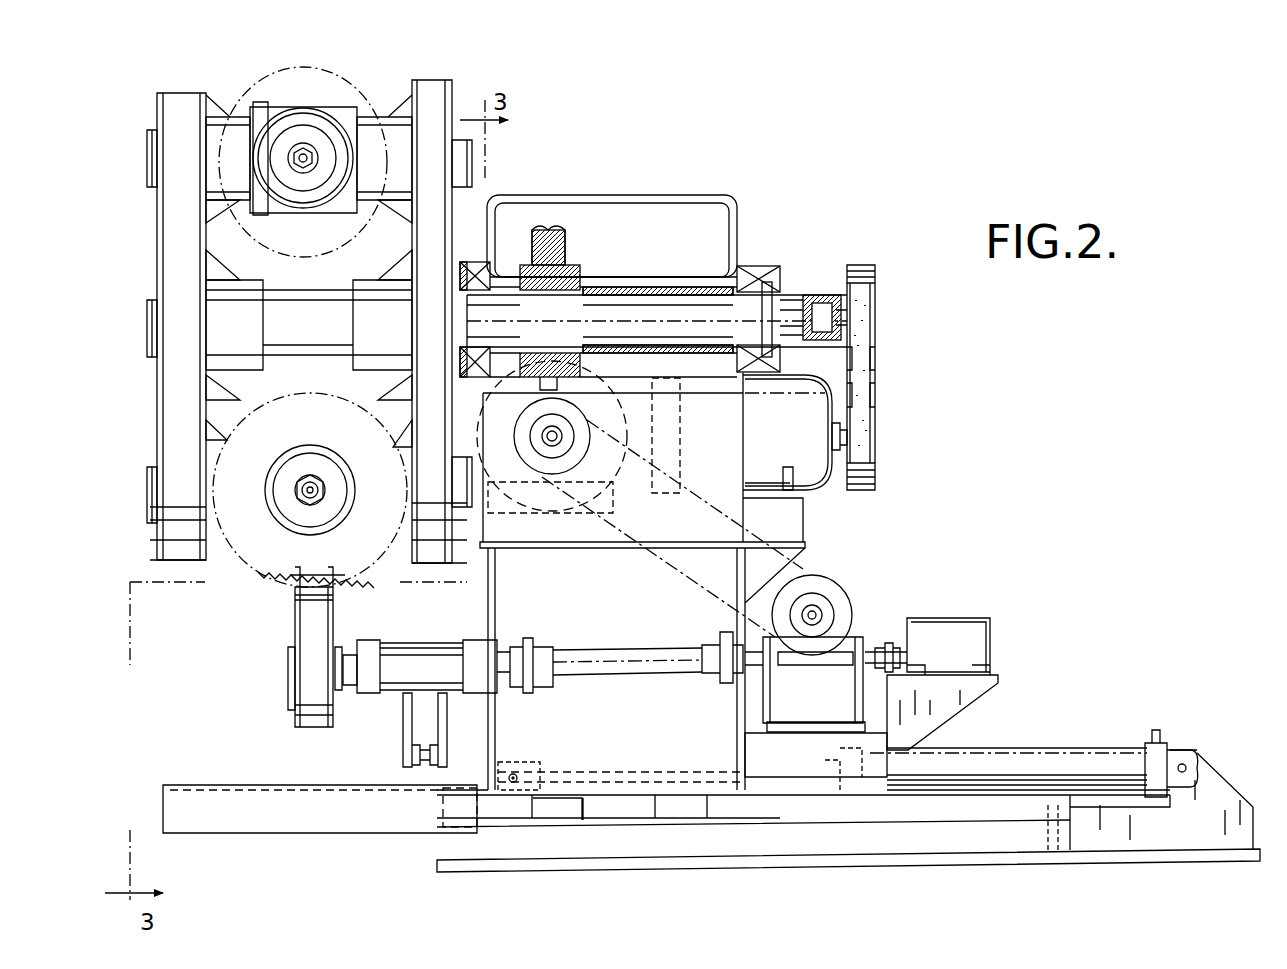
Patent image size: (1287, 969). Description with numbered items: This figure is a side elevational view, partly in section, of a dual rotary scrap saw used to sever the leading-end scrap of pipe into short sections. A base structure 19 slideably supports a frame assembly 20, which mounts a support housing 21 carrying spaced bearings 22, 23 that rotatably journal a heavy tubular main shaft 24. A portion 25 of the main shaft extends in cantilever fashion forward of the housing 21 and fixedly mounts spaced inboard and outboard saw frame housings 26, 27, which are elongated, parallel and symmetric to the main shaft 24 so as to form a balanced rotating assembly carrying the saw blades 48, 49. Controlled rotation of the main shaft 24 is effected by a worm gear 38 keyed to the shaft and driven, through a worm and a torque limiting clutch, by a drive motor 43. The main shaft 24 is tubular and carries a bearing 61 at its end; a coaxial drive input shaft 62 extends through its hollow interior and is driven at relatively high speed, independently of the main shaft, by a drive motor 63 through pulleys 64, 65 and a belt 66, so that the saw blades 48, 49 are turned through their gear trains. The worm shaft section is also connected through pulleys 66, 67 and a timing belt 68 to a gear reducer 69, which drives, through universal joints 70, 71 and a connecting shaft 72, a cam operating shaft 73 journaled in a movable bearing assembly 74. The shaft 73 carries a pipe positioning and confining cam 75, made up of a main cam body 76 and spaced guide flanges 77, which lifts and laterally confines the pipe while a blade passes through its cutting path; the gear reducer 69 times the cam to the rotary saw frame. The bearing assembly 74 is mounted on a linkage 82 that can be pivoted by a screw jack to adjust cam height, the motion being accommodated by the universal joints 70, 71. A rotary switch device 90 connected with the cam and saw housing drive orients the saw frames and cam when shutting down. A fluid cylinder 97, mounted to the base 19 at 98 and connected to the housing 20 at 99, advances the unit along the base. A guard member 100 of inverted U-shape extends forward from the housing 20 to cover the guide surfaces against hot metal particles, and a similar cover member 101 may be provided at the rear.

The base structure 19 is at (684, 862).
The frame assembly 20 is at (630, 600).
The support housing 21 is at (735, 220).
The bearing 22 is at (483, 290).
The bearing 23 is at (742, 280).
The main shaft 24 is at (658, 308).
The portion of the main shaft 25 is at (303, 296).
The inboard saw frame housing 26 is at (428, 100).
The outboard saw frame housing 27 is at (175, 104).
The worm gear 38 is at (574, 271).
The drive motor 43 is at (609, 394).
The saw blade 48 is at (252, 567).
The saw blade 49 is at (302, 64).
The bearing 61 is at (822, 298).
The drive input shaft 62 is at (830, 317).
The drive motor 63 is at (788, 391).
The pulley 64 is at (876, 445).
The pulley 65 is at (876, 359).
The belt 66 is at (578, 446).
The pulley 67 is at (835, 606).
The timing belt 68 is at (795, 563).
The gear reducer 69 is at (805, 693).
The universal joint 70 is at (724, 633).
The universal joint 71 is at (530, 640).
The connecting shaft 72 is at (629, 668).
The cam operating shaft 73 is at (352, 687).
The movable bearing assembly 74 is at (423, 648).
The pipe positioning and confining cam 75 is at (310, 629).
The main cam body 76 is at (313, 697).
The guide flanges 77 is at (297, 584).
The linkage 82 is at (410, 752).
The rotary switch device 90 is at (990, 644).
The fluid cylinder 97 is at (1026, 756).
The cylinder mounting 98 is at (1188, 766).
The cylinder connection 99 is at (514, 768).
The guard member 100 is at (323, 826).
The cover member 101 is at (765, 751).